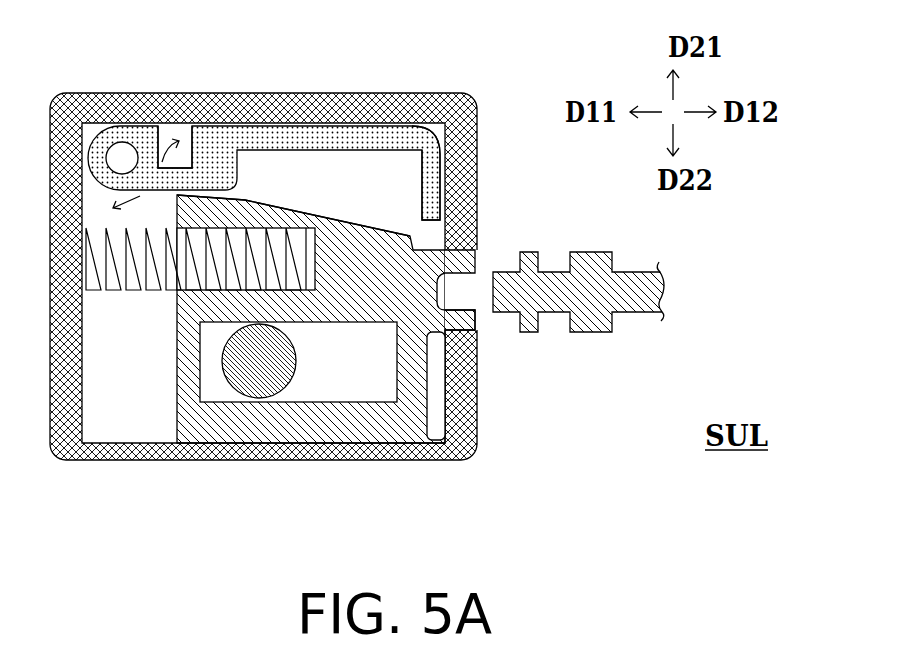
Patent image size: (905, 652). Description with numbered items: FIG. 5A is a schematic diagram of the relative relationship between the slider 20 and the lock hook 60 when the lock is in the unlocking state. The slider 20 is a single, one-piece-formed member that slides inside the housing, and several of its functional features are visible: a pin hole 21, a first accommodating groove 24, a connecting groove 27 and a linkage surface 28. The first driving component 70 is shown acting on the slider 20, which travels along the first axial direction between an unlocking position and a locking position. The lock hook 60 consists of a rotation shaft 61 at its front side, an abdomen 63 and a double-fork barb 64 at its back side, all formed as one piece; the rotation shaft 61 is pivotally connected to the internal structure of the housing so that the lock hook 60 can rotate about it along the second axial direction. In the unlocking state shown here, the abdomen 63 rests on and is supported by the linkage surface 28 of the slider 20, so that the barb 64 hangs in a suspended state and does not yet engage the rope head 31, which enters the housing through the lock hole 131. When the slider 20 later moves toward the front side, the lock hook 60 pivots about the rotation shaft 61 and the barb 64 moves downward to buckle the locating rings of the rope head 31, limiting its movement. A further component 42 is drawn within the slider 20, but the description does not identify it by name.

The slider 20 is at (183, 395).
The pin hole 21 is at (362, 385).
The first accommodating groove 24 is at (225, 292).
The connecting groove 27 is at (427, 383).
The linkage surface 28 is at (300, 207).
The rope head 31 is at (591, 332).
The roller 42 is at (280, 392).
The lock hook 60 is at (245, 127).
The rotation shaft 61 is at (124, 150).
The abdomen 63 is at (197, 146).
The barb 64 is at (432, 127).
The first driving component 70 is at (122, 290).
The lock hole 131 is at (473, 337).